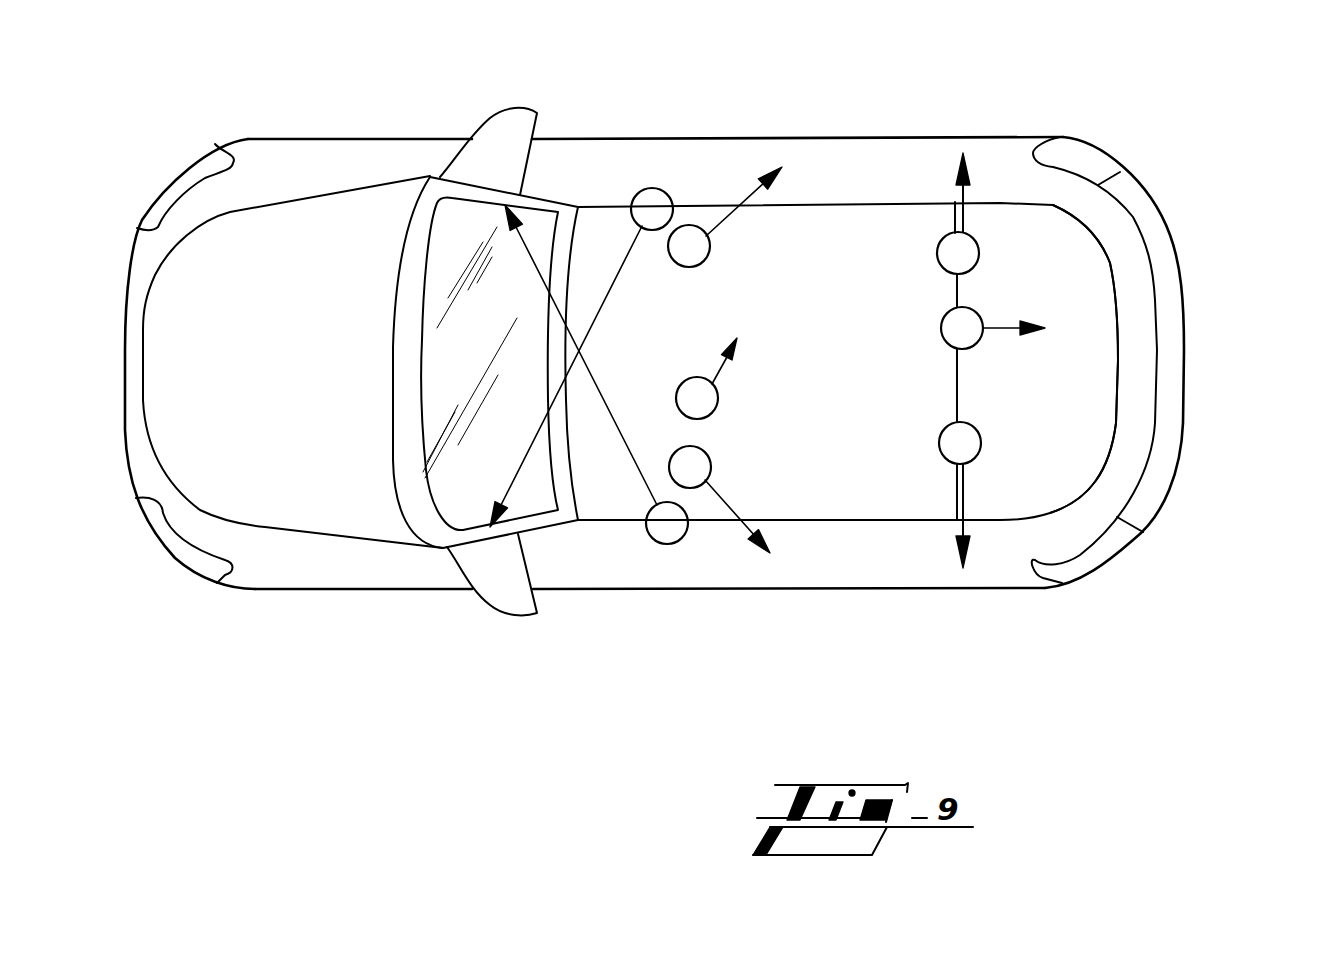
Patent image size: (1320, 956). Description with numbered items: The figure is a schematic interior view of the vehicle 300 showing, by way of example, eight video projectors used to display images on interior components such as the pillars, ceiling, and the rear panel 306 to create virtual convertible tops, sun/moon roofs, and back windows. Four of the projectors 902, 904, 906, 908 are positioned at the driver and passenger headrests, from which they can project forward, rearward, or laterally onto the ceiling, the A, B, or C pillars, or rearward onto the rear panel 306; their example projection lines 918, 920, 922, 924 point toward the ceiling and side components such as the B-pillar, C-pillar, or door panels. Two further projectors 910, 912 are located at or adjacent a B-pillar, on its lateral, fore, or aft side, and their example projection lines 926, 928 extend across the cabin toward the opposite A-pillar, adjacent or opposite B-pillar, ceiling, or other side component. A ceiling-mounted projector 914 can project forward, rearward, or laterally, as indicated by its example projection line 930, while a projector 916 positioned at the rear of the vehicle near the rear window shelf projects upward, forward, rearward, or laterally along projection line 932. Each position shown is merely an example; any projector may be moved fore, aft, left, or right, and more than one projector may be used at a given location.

The vehicle 300 is at (418, 770).
The rear panel 306 is at (1087, 300).
The projector 902 is at (690, 225).
The projector 904 is at (711, 458).
The projector 906 is at (945, 237).
The projector 908 is at (940, 453).
The projector 910 is at (645, 189).
The projector 912 is at (657, 541).
The projector 914 is at (676, 397).
The projector 916 is at (979, 309).
The projection line 918 is at (733, 212).
The projection line 920 is at (728, 503).
The projection line 922 is at (967, 210).
The projection line 924 is at (967, 493).
The projection line 926 is at (627, 257).
The projection line 928 is at (632, 480).
The projection line 930 is at (713, 373).
The projection line 932 is at (985, 344).